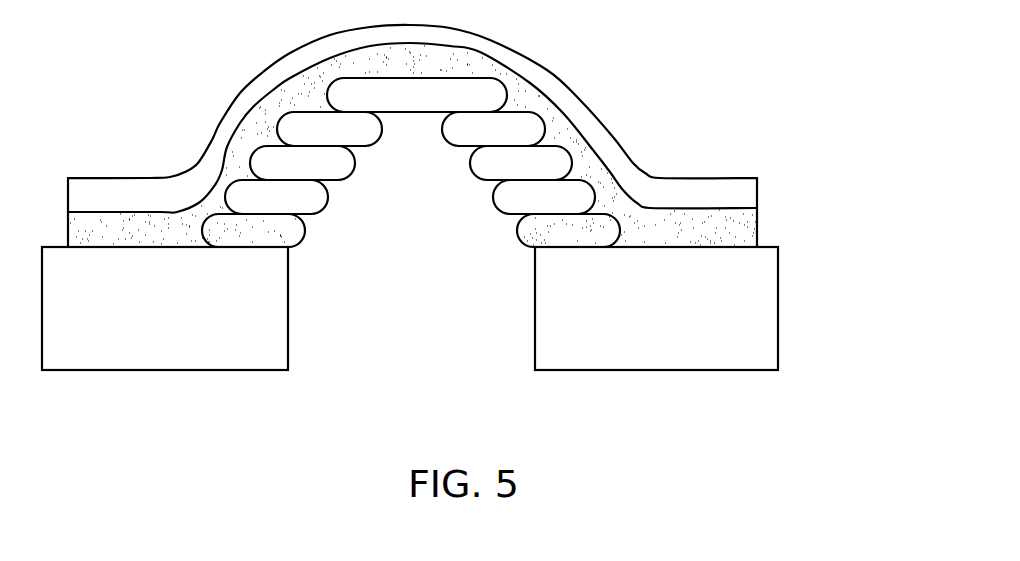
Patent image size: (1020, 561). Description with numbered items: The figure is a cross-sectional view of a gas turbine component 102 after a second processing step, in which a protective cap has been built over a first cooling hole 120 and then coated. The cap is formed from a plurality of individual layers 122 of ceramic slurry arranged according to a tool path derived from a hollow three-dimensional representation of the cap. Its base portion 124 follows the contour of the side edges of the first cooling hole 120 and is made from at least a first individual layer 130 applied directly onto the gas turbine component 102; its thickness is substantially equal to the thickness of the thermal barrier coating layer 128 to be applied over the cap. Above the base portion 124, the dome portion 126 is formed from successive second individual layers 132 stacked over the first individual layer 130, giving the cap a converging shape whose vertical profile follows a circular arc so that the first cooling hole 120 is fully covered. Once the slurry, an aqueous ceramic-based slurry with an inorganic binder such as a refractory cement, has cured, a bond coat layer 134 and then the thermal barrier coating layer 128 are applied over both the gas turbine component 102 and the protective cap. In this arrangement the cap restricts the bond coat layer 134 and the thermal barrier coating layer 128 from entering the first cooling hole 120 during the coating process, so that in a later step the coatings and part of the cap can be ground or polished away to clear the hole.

The gas turbine component 102 is at (778, 310).
The first cooling hole 120 is at (460, 211).
The plurality of individual layers 122 is at (575, 152).
The base portion 124 is at (640, 228).
The dome portion 126 is at (559, 134).
The thermal barrier coating layer 128 is at (758, 192).
The first individual layer 130 is at (515, 230).
The second individual layers 132 is at (493, 195).
The bond coat layer 134 is at (758, 240).